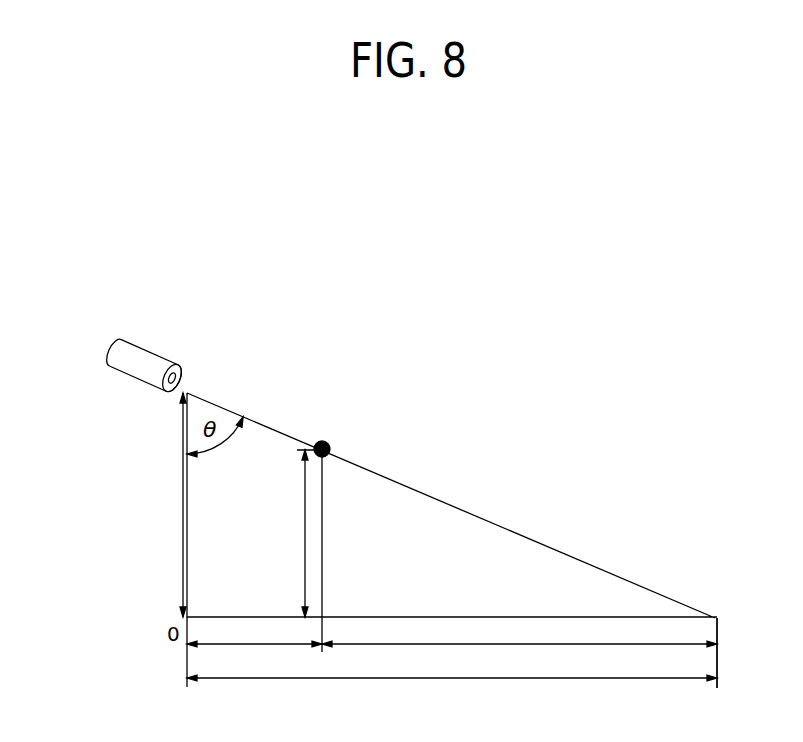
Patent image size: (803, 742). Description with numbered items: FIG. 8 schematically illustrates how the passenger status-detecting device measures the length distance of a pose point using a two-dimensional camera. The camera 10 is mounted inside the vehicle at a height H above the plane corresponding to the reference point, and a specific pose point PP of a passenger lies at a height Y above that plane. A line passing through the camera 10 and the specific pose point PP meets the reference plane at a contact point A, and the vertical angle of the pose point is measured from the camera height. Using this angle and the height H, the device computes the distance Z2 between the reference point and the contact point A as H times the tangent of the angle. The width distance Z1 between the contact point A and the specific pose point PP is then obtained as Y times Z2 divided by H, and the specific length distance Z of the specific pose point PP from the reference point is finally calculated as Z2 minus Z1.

The camera 10 is at (108, 352).
The specific pose point PP is at (327, 440).
The height of the camera H is at (174, 505).
The height of the specific pose point Y is at (303, 533).
The specific length distance Z is at (254, 634).
The width distance between the contact point and the specific pose point Z1 is at (519, 634).
The distance between the reference point and the contact point Z2 is at (452, 668).
The contact point A is at (726, 653).